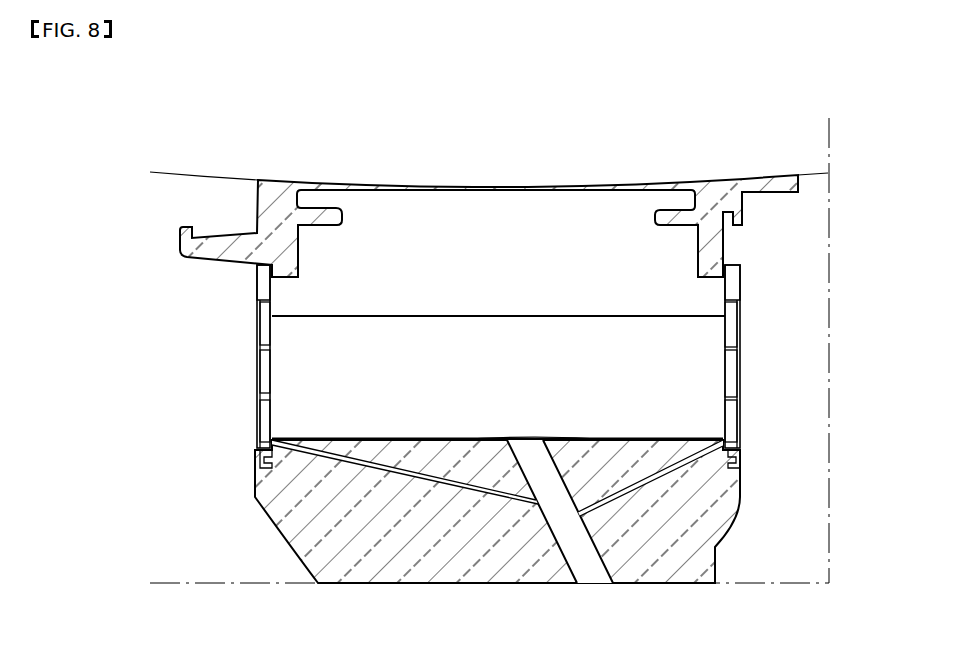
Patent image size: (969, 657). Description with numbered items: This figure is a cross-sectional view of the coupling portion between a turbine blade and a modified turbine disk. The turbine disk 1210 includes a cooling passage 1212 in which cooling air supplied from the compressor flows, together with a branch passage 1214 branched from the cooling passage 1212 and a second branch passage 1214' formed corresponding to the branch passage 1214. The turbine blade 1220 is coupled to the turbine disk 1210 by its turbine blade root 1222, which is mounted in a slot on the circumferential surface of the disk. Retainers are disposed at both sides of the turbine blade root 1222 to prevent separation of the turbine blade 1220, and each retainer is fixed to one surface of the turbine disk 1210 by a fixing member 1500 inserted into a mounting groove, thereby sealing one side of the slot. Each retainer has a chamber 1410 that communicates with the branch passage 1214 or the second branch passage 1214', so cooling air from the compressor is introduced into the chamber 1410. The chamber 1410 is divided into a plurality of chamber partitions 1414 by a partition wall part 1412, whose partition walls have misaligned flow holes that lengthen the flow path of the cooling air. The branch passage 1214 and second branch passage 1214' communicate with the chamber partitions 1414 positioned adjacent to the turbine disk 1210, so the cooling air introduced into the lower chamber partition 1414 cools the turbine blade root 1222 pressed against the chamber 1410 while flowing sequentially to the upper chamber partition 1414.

The chamber 1410 is at (80, 250).
The partition wall part 1412 is at (260, 335).
The chamber partitions 1414 is at (252, 309).
The fixing member 1500 is at (263, 452).
The turbine blade 1220 is at (653, 273).
The turbine blade root 1222 is at (683, 398).
The turbine disk 1210 is at (693, 530).
The cooling passage 1212 is at (577, 548).
The branch passage 1214 is at (405, 534).
The second branch passage 1214' is at (650, 548).